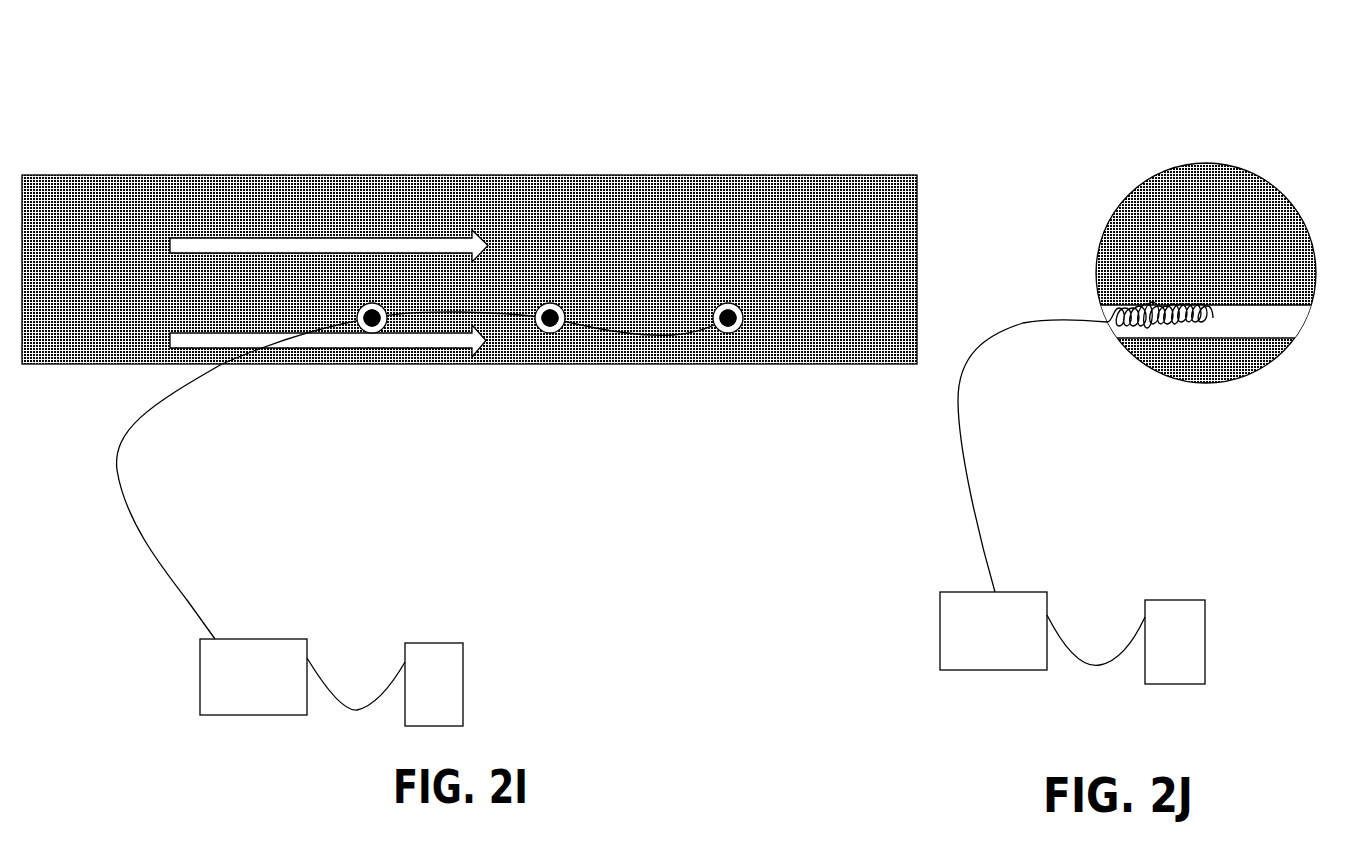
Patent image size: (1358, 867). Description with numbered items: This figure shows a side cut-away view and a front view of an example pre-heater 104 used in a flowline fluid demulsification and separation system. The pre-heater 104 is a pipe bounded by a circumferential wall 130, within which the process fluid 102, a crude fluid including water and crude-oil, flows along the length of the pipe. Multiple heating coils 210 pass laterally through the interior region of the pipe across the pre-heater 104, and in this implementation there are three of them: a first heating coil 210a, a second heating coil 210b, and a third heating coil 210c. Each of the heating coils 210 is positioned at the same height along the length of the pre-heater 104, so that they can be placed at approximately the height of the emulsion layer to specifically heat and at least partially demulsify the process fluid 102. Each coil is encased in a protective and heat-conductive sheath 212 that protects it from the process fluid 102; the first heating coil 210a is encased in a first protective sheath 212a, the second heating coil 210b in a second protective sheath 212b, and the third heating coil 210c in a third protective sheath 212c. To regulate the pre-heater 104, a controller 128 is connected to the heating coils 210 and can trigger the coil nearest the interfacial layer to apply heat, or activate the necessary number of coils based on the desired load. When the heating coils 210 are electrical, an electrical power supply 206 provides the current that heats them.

In FIG. 2I, the pre-heater 104 is at (469, 192).
In FIG. 2J, the pre-heater 104 is at (1187, 194).
In FIG. 2I, the circumferential wall 130 is at (630, 175).
In FIG. 2J, the circumferential wall 130 is at (1180, 165).
In FIG. 2I, the process fluid 102 is at (682, 203).
In FIG. 2J, the process fluid 102 is at (1273, 213).
In FIG. 2I, the protective and heat-conductive sheath 212 is at (638, 269).
In FIG. 2J, the protective and heat-conductive sheath 212 is at (1150, 303).
In FIG. 2I, the first protective sheath 212a is at (393, 322).
In FIG. 2I, the second protective sheath 212b is at (565, 330).
In FIG. 2I, the third protective sheath 212c is at (745, 320).
In FIG. 2I, the heating coils 210 is at (463, 471).
In FIG. 2J, the heating coils 210 is at (1103, 328).
In FIG. 2I, the first heating coil 210a is at (373, 334).
In FIG. 2I, the second heating coil 210b is at (546, 334).
In FIG. 2I, the third heating coil 210c is at (745, 330).
In FIG. 2I, the controller 128 is at (200, 663).
In FIG. 2J, the controller 128 is at (940, 621).
In FIG. 2I, the electrical power supply 206 is at (463, 688).
In FIG. 2J, the electrical power supply 206 is at (1205, 655).